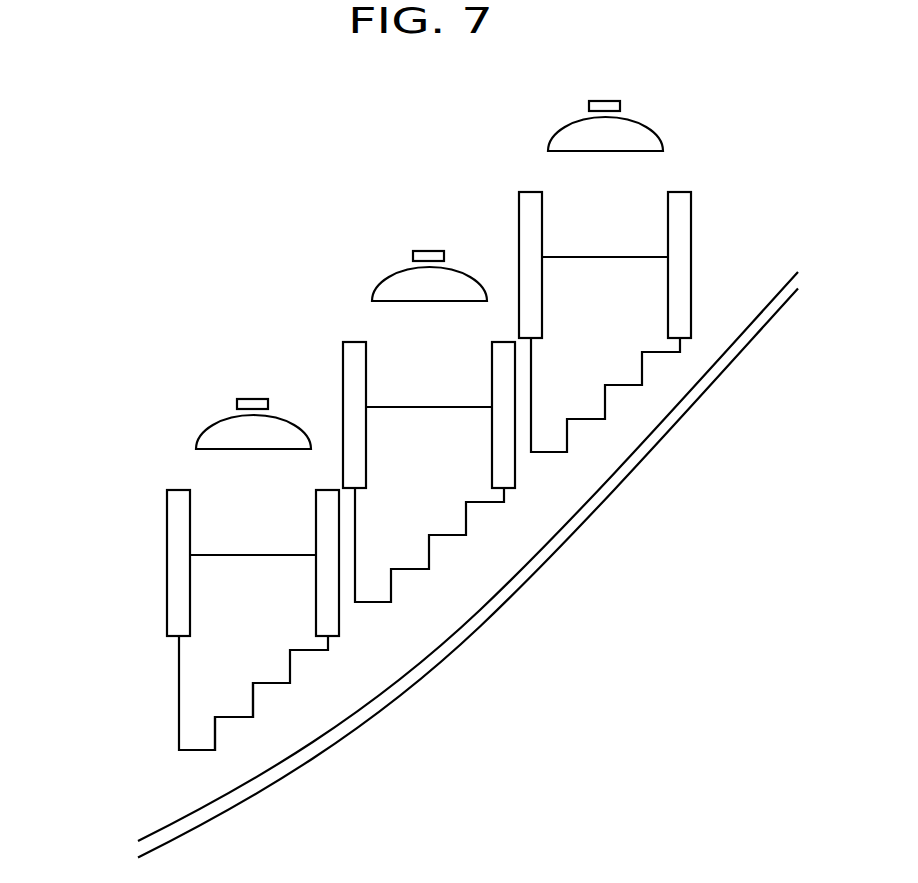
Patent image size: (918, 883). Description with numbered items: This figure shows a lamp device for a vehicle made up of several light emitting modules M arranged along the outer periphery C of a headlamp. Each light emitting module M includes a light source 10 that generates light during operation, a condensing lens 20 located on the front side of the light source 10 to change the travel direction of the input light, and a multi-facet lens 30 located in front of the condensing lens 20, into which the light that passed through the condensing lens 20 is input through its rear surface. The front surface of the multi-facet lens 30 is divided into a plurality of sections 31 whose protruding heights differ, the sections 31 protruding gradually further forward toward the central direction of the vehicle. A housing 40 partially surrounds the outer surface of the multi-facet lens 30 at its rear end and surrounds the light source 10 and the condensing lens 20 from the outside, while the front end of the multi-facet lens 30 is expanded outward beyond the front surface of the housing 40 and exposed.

The light source 10 is at (250, 398).
The condensing lens 20 is at (213, 457).
The multi-facet lens 30 is at (192, 682).
The sections 31 is at (277, 683).
The housing 40 is at (168, 565).
The light emitting module M is at (369, 477).
The outer periphery C is at (547, 562).